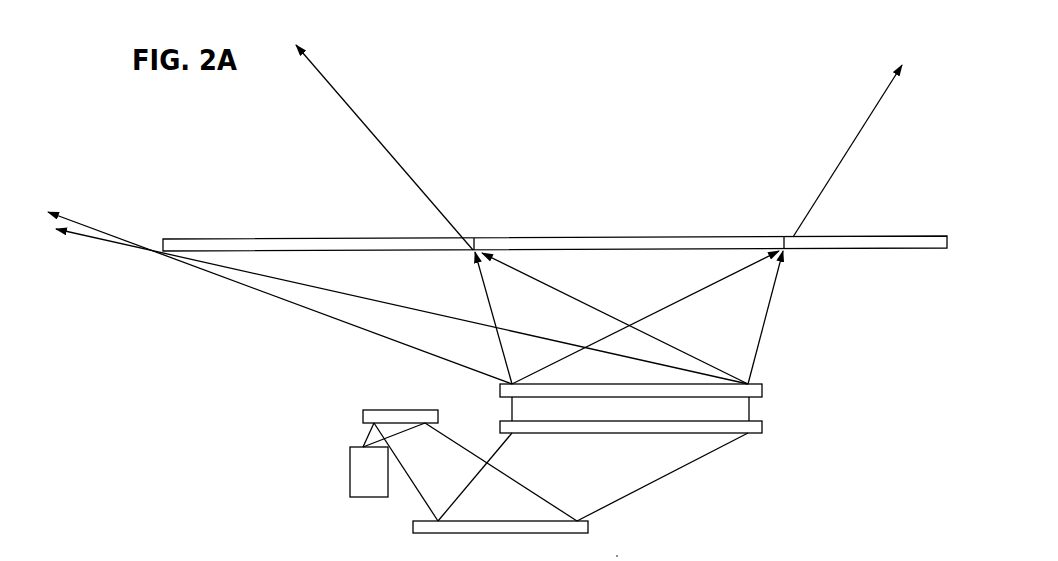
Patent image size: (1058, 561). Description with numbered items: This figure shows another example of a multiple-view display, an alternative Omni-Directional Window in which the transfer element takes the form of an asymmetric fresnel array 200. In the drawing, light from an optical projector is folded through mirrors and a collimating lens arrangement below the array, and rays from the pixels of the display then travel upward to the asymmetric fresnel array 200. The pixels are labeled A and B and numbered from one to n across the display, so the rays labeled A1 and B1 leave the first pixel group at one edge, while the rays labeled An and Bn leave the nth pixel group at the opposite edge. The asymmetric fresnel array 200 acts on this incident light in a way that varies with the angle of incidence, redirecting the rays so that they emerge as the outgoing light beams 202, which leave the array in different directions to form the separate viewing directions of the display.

The asymmetric fresnel array 200 is at (678, 240).
The light beams 202 is at (83, 230).
The A1 pixel A1 is at (490, 318).
The B1 pixel B1 is at (645, 317).
The An pixel An is at (615, 318).
The Bn pixel Bn is at (750, 317).